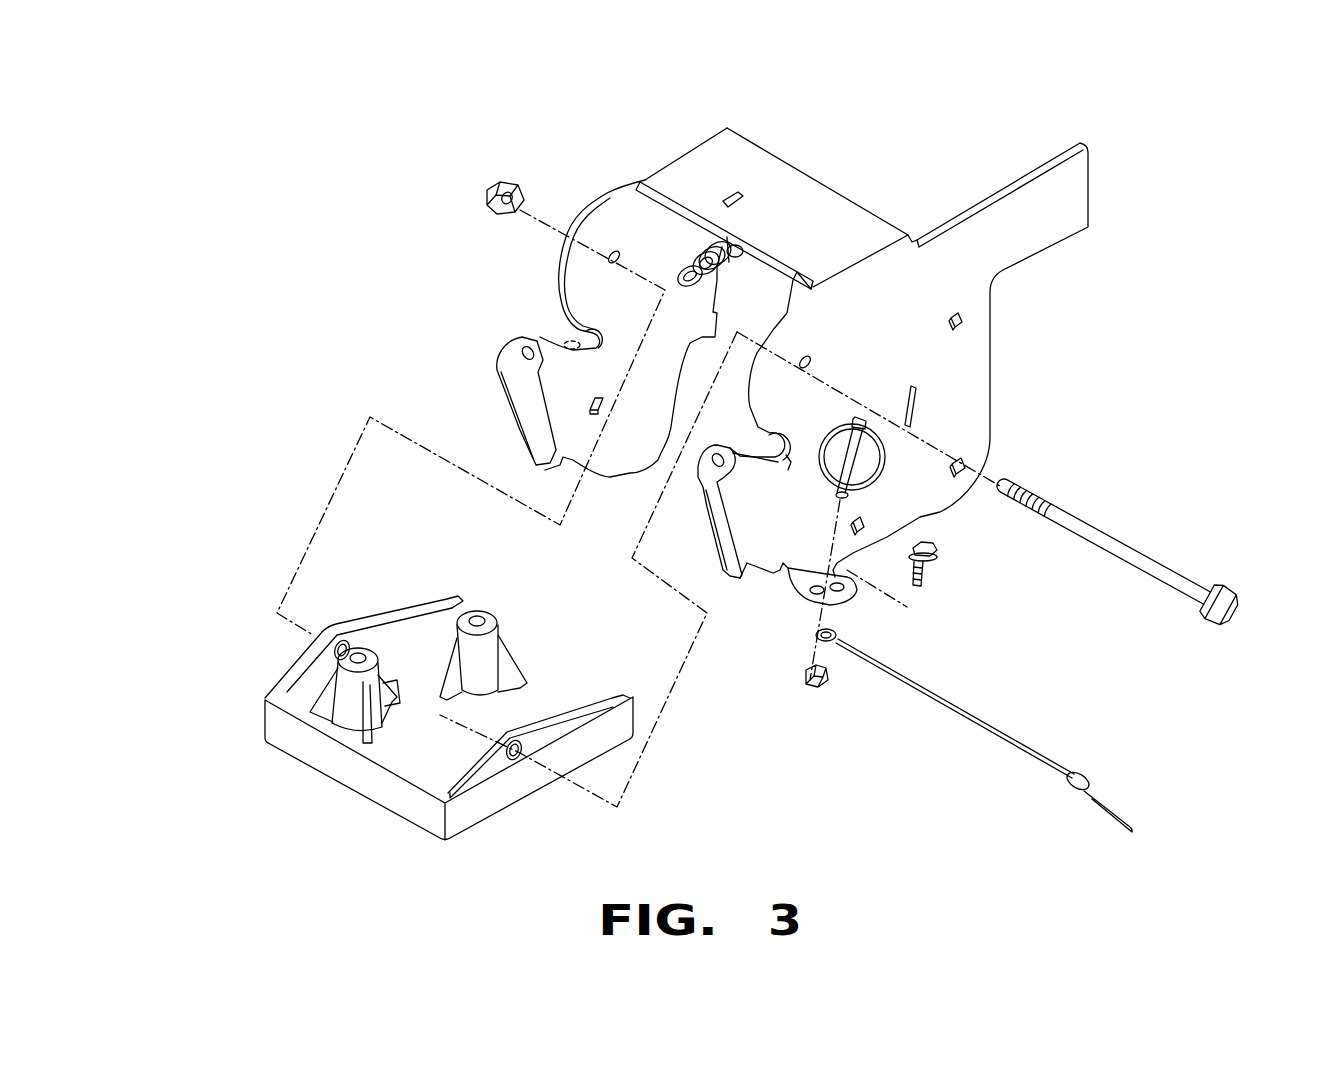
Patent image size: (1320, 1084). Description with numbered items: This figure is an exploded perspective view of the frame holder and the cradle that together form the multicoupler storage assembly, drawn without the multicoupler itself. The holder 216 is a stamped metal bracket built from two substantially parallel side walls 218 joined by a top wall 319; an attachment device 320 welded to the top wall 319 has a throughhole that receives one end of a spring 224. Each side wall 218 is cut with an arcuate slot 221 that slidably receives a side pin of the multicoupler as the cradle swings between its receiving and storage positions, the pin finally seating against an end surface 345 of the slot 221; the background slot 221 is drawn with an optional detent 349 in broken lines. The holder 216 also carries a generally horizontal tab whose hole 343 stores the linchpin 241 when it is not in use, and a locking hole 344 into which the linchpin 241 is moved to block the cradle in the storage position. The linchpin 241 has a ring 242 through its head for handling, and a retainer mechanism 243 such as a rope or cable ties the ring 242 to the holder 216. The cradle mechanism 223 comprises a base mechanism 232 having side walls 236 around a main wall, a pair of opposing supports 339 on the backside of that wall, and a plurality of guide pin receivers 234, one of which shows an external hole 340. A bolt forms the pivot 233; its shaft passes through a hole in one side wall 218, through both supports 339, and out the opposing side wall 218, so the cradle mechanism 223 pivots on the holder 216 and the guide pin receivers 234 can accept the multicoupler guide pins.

The holder 216 is at (1019, 160).
The side walls 218 is at (623, 227).
The top wall 319 is at (833, 222).
The attachment device 320 is at (735, 240).
The spring 224 is at (700, 247).
The arcuate slot 221 is at (580, 335).
The detent 349 is at (565, 342).
The locking hole 344 is at (540, 342).
The end surface 345 is at (795, 452).
The hole 343 is at (813, 583).
The linchpin 241 is at (853, 457).
The ring 242 is at (883, 473).
The pivot 233 is at (1180, 573).
The retainer mechanism 243 is at (1057, 760).
The cradle mechanism 223 is at (240, 666).
The base mechanism 232 is at (468, 596).
The guide pin receivers 234 is at (493, 628).
The supports 339 is at (363, 620).
The external hole 340 is at (392, 688).
The side walls 236 is at (483, 815).